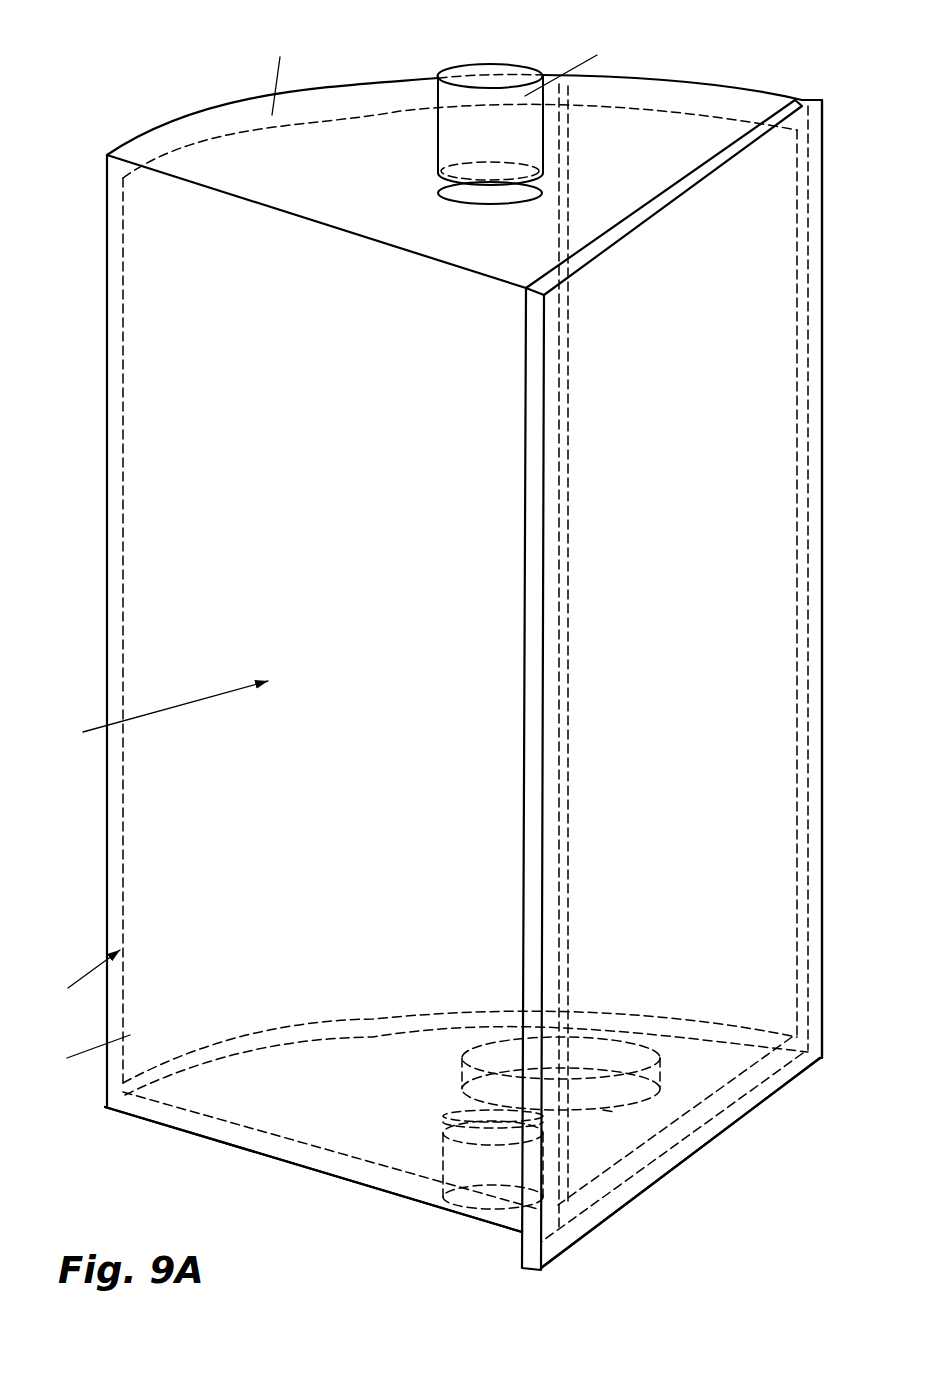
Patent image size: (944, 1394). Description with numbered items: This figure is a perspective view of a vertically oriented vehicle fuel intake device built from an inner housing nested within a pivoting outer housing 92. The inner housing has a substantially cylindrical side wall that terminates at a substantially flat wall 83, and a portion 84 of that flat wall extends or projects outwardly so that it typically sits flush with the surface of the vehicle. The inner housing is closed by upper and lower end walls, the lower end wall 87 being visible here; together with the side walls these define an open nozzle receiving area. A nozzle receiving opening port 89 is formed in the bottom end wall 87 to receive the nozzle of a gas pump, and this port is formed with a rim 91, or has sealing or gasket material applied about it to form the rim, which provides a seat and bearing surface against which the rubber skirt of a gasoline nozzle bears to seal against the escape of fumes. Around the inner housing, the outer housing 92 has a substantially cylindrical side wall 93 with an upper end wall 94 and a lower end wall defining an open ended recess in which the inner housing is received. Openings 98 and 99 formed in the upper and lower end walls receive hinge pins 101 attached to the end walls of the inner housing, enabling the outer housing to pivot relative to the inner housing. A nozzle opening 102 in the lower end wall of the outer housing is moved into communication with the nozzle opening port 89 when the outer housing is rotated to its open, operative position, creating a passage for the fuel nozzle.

The flat wall 83 is at (783, 845).
The outwardly projecting portion of flat wall 84 is at (526, 1249).
The lower end wall 87 is at (386, 1178).
The nozzle receiving opening port 89 is at (580, 1070).
The rim 91 is at (643, 1070).
The outer housing 92 is at (263, 1130).
The cylindrical side wall of outer housing 93 is at (343, 796).
The upper end wall of outer housing 94 is at (297, 1162).
The opening 98 is at (452, 1103).
The opening 99 is at (517, 175).
The hinge pin 101 is at (450, 1200).
The nozzle opening 102 is at (603, 1110).